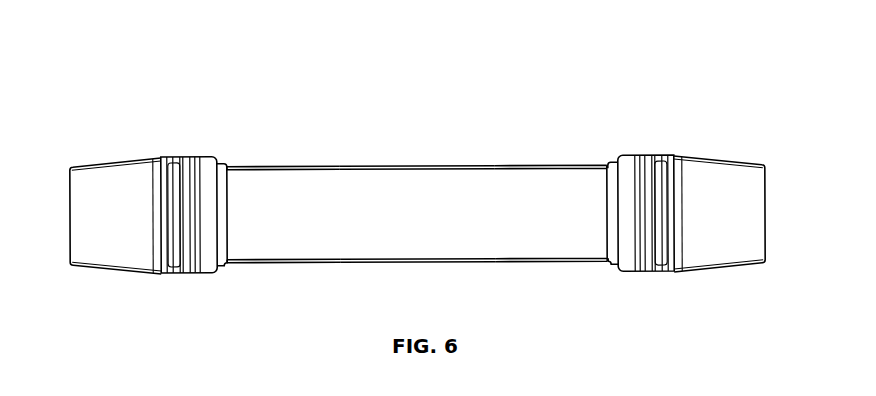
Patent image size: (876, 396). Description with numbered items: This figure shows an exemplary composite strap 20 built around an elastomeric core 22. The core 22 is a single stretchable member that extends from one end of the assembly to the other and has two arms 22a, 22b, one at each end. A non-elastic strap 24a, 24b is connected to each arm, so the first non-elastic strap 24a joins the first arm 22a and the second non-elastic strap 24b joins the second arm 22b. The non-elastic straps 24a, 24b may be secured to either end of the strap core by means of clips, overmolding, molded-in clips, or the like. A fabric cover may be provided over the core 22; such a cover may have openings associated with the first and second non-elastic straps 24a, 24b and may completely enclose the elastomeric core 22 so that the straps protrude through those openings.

The composite strap 20 is at (453, 142).
The elastomeric core 22 is at (388, 207).
The first arm of elastomeric core 22a is at (280, 223).
The second arm of elastomeric core 22b is at (585, 223).
The first non-elastic strap 24a is at (68, 197).
The second non-elastic strap 24b is at (767, 200).